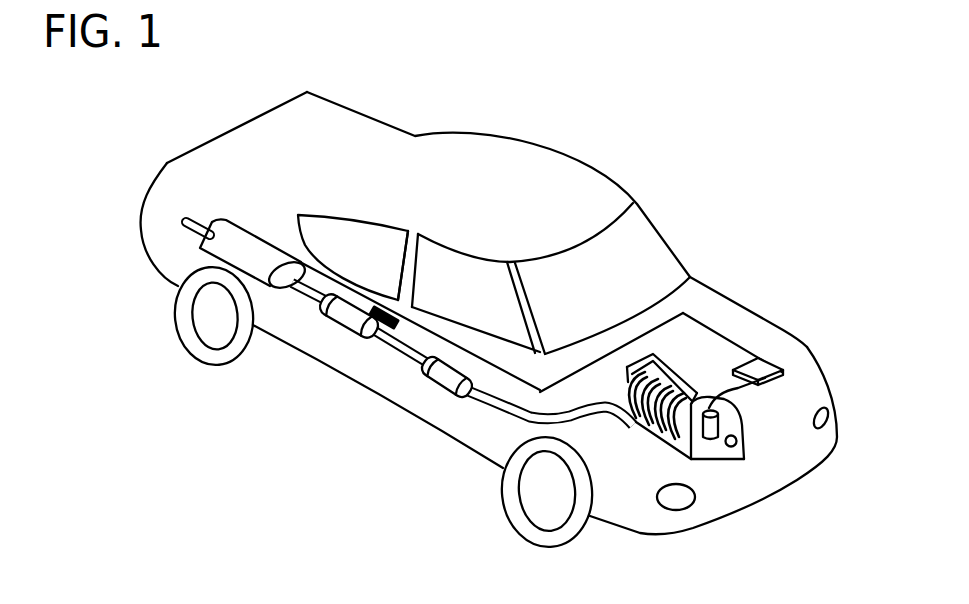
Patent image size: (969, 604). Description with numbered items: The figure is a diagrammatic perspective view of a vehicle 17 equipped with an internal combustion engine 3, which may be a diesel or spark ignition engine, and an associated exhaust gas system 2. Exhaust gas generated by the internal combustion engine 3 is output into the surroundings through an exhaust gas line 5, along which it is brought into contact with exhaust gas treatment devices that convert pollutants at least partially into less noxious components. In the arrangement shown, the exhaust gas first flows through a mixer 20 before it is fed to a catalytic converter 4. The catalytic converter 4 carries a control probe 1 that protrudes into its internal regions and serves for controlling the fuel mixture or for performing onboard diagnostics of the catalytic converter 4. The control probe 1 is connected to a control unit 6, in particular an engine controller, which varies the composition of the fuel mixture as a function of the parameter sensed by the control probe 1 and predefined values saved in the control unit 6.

The control probe 1 is at (375, 326).
The exhaust gas system 2 is at (609, 432).
The internal combustion engine 3 is at (734, 425).
The catalytic converter 4 is at (372, 336).
The exhaust gas line 5 is at (302, 291).
The control unit 6 is at (778, 366).
The vehicle 17 is at (252, 150).
The mixer 20 is at (447, 383).